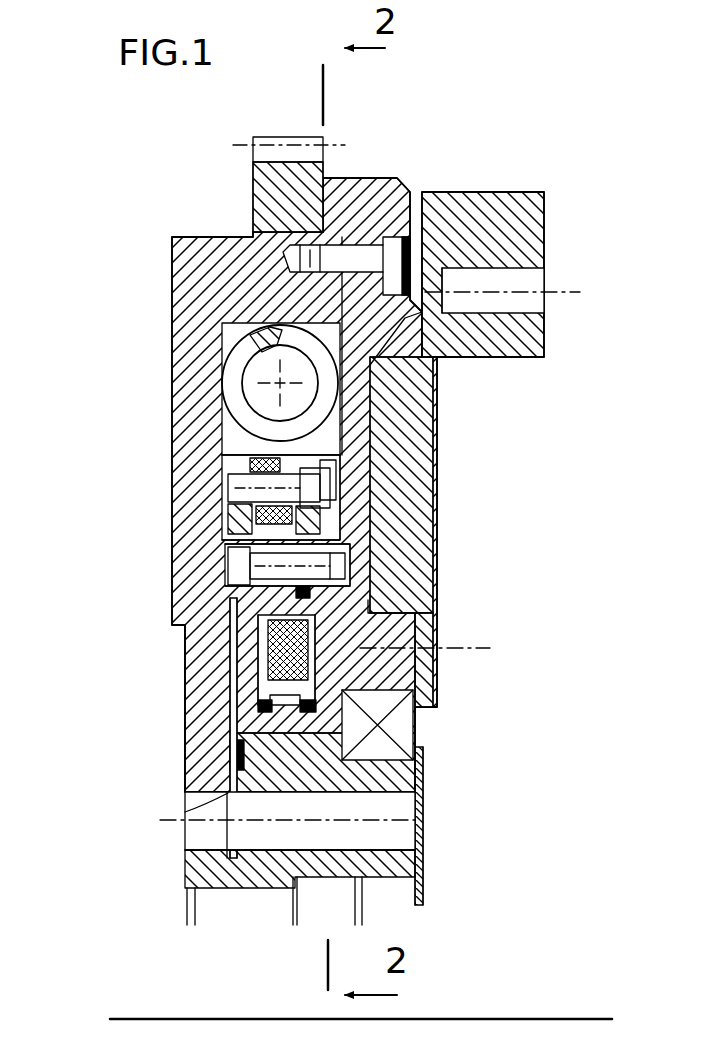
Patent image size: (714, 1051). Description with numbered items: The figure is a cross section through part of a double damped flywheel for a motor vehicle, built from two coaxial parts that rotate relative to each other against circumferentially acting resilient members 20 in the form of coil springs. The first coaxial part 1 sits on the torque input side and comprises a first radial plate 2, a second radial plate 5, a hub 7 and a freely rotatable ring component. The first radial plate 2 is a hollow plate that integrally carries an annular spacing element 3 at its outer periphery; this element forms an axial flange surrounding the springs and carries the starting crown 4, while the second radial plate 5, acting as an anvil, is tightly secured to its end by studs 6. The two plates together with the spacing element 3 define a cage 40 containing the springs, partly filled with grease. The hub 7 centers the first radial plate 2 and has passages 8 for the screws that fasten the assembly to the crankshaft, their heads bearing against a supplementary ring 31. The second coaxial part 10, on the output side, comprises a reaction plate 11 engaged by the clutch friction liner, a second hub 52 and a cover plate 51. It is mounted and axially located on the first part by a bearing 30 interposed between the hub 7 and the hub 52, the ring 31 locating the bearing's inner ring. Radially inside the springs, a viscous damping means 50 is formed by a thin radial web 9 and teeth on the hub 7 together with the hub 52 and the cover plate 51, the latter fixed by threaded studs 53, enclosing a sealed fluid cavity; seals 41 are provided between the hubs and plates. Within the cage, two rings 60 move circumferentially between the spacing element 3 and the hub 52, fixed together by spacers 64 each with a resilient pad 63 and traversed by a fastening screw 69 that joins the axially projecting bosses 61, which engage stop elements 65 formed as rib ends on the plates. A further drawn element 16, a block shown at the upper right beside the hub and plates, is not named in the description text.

The first coaxial part 1 is at (158, 411).
The first radial plate 2 is at (170, 590).
The annular spacing element 3 is at (193, 238).
The starting crown 4 is at (247, 173).
The second radial plate 5 is at (377, 383).
The studs 6 is at (393, 235).
The hub 7 is at (185, 880).
The passages 8 is at (228, 793).
The radial web 9 is at (233, 727).
The second coaxial part 10 is at (562, 350).
The reaction plate 11 is at (440, 420).
The connection block 16 is at (472, 192).
The resilient members 20 is at (240, 363).
The bearing 30 is at (424, 731).
The supplementary ring 31 is at (427, 868).
The cage 40 is at (232, 343).
The seals 41 is at (370, 552).
The viscous damping means 50 is at (272, 680).
The cover plate 51 is at (240, 648).
The hub 52 is at (417, 676).
The threaded studs 53 is at (232, 549).
The rings 60 is at (240, 465).
The boss 61 is at (232, 509).
The resilient pad 63 is at (262, 452).
The spacers 64 is at (232, 492).
The stop elements 65 is at (232, 534).
The fastening screw 69 is at (336, 478).